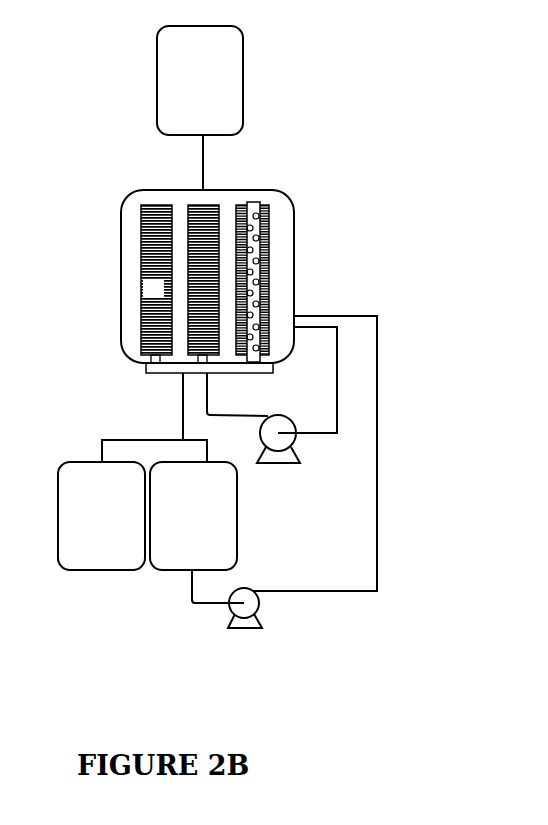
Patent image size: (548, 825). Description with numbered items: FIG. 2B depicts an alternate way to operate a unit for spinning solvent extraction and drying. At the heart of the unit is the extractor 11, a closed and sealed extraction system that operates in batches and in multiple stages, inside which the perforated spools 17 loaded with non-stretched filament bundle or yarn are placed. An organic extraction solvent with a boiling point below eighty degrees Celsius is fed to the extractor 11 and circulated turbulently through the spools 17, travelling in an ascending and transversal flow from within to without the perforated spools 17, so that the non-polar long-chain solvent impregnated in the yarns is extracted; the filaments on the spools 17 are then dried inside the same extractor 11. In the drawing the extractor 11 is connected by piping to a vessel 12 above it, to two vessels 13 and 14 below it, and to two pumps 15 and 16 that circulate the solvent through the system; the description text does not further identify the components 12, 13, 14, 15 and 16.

The extractor 11 is at (222, 276).
The gas collection vessel 12 is at (200, 80).
The storage tank 13 is at (101, 516).
The electrolyte reservoir 14 is at (193, 516).
The recirculation pump 15 is at (278, 454).
The feed pump 16 is at (255, 608).
The spools 17 is at (156, 284).